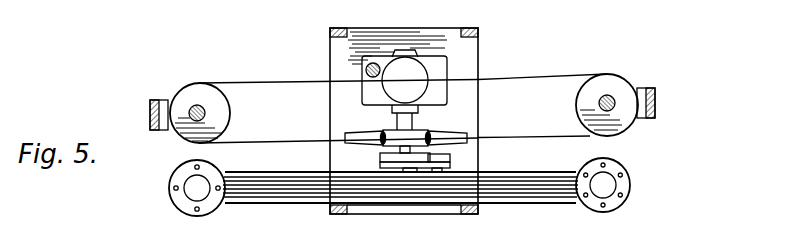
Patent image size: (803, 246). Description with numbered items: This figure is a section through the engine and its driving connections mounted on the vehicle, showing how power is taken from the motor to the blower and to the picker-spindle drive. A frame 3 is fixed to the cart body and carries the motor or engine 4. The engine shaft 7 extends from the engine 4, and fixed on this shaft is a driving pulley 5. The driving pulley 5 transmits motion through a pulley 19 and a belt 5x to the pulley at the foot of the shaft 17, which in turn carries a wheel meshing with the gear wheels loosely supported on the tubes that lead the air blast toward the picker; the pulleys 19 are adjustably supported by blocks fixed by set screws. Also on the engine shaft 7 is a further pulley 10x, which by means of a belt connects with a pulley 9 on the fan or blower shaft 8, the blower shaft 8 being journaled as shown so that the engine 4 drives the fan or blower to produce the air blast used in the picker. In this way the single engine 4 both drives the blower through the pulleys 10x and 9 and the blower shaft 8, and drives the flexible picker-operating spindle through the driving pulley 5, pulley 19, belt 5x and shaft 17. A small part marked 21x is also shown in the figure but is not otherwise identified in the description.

The frame 3 is at (414, 121).
The motor or engine 4 is at (448, 69).
The driving pulley 5 is at (412, 134).
The belt 5x is at (534, 117).
The engine shaft 7 is at (415, 124).
The fan or blower shaft 8 is at (436, 172).
The pulley 9 is at (450, 167).
The pulley 10x is at (378, 155).
The shaft 17 is at (206, 111).
The pulley 19 is at (548, 120).
The pin 21x is at (376, 64).